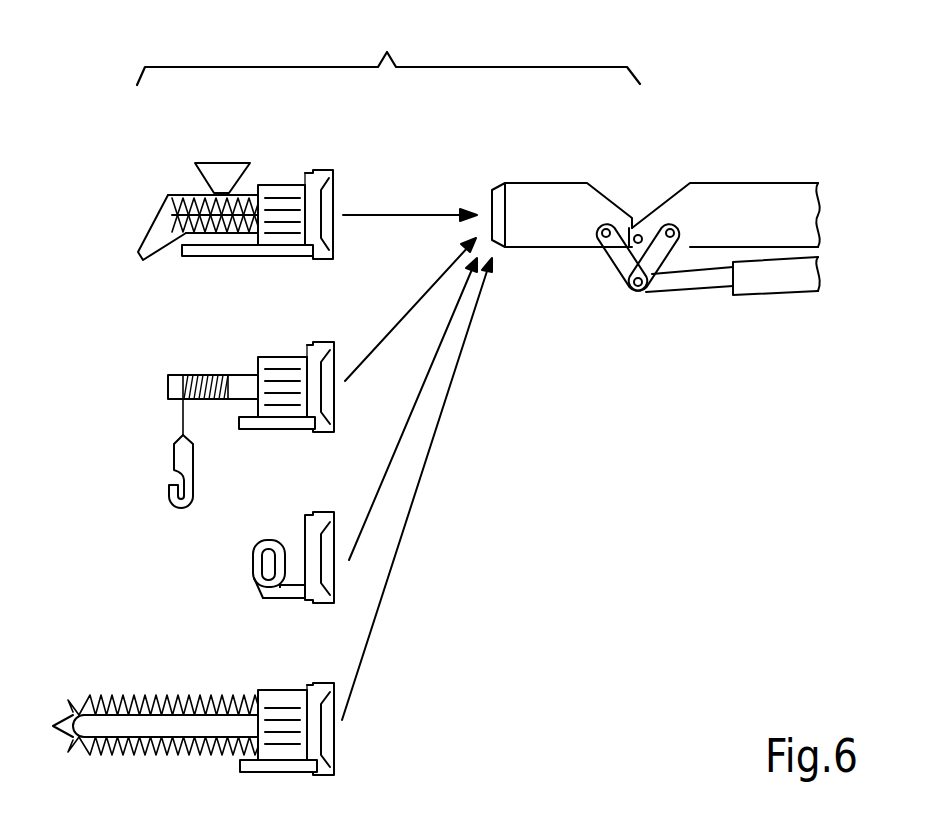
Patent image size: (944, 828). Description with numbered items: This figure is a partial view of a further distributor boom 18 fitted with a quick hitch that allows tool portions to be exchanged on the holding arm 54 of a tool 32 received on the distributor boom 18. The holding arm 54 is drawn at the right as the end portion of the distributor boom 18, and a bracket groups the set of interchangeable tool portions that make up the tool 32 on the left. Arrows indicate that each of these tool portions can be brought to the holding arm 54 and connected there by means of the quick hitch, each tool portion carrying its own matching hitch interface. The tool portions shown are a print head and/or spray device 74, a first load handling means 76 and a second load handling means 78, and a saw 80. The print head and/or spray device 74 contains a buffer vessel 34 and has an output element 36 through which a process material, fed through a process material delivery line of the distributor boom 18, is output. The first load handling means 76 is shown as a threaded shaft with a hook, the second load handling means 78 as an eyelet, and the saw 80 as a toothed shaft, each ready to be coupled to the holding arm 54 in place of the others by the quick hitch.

The distributor boom 18 is at (744, 160).
The tool 32 is at (388, 54).
The buffer vessel 34 is at (232, 163).
The output element 36 is at (136, 255).
The holding arm 54 is at (545, 183).
The print head and/or spray device 74 is at (238, 257).
The first load handling means 76 is at (193, 375).
The second load handling means 78 is at (277, 598).
The saw 80 is at (148, 698).